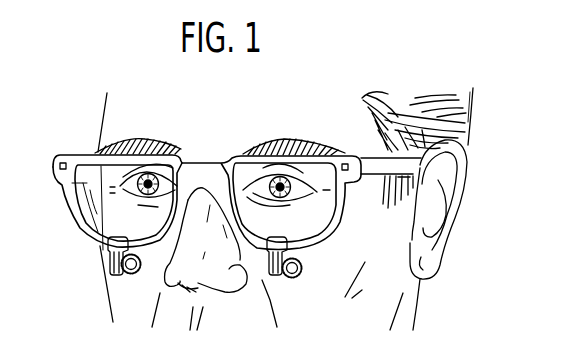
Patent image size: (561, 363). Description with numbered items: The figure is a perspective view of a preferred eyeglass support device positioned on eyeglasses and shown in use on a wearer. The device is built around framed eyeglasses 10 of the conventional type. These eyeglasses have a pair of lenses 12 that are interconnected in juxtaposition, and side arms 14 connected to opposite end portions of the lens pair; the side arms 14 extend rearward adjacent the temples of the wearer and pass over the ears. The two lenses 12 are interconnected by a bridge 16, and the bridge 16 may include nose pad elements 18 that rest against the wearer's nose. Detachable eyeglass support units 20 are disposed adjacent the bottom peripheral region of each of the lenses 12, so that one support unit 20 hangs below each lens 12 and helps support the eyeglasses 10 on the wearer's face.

The framed eyeglasses 10 is at (72, 154).
The lenses 12 is at (75, 183).
The side arms 14 is at (372, 176).
The bridge 16 is at (205, 163).
The nose pad elements 18 is at (178, 229).
The detachable eyeglass support units 20 is at (108, 262).